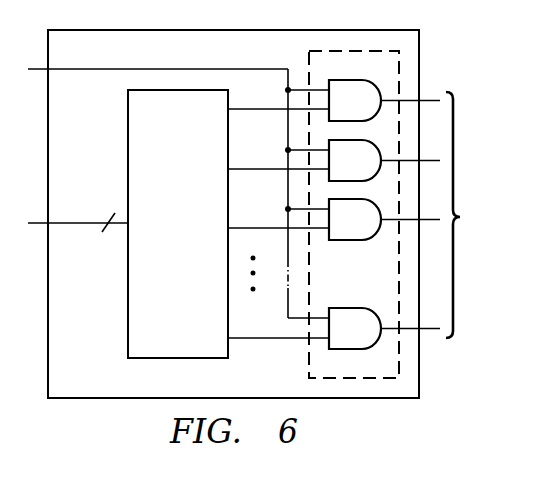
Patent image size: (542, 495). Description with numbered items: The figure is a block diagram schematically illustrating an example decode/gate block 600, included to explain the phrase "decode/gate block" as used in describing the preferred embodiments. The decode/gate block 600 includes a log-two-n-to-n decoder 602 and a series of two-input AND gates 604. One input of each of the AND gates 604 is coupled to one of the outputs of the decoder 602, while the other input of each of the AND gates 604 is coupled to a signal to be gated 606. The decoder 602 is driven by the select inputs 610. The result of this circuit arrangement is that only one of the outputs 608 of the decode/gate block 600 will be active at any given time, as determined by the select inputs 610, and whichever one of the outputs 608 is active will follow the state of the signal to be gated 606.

The decode/gate block 600 is at (107, 380).
The log2 n:n decoder 602 is at (198, 263).
The two-input AND gates 604 is at (306, 354).
The signal to be gated 606 is at (88, 72).
The outputs 608 is at (438, 215).
The select inputs 610 is at (85, 226).